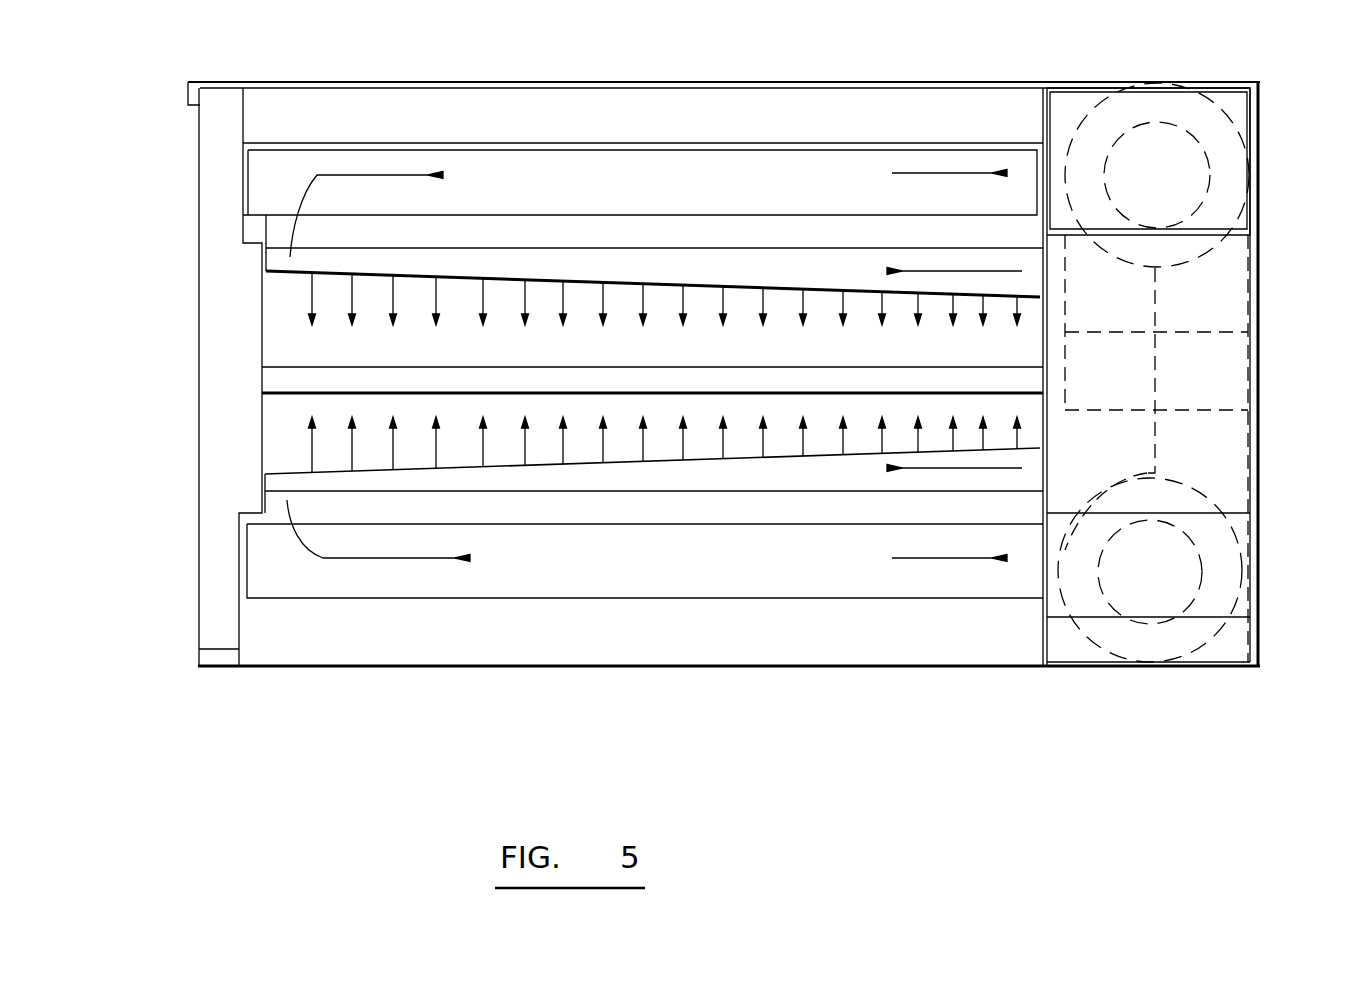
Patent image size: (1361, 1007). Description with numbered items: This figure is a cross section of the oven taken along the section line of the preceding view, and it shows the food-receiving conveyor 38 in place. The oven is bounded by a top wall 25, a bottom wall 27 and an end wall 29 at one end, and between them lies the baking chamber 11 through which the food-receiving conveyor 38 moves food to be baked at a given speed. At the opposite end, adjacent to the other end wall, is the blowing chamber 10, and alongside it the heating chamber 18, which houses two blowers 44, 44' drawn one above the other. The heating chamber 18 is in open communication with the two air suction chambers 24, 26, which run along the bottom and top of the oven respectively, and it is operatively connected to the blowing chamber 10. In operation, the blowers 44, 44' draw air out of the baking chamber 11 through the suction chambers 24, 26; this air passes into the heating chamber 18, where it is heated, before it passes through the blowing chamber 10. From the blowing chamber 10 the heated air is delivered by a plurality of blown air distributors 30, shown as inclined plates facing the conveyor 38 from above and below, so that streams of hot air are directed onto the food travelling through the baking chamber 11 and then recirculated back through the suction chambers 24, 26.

The blowing chamber 10 is at (1225, 360).
The baking chamber 11 is at (293, 338).
The heating chamber 18 is at (1230, 268).
The air suction chamber 24 is at (293, 587).
The top wall 25 is at (678, 117).
The air suction chamber 26 is at (467, 173).
The bottom wall 27 is at (617, 655).
The end wall 29 is at (217, 435).
The blown air distributor 30 is at (267, 273).
The food-receiving conveyor 38 is at (293, 373).
The blower 44 is at (1148, 143).
The blower 44' is at (1148, 613).